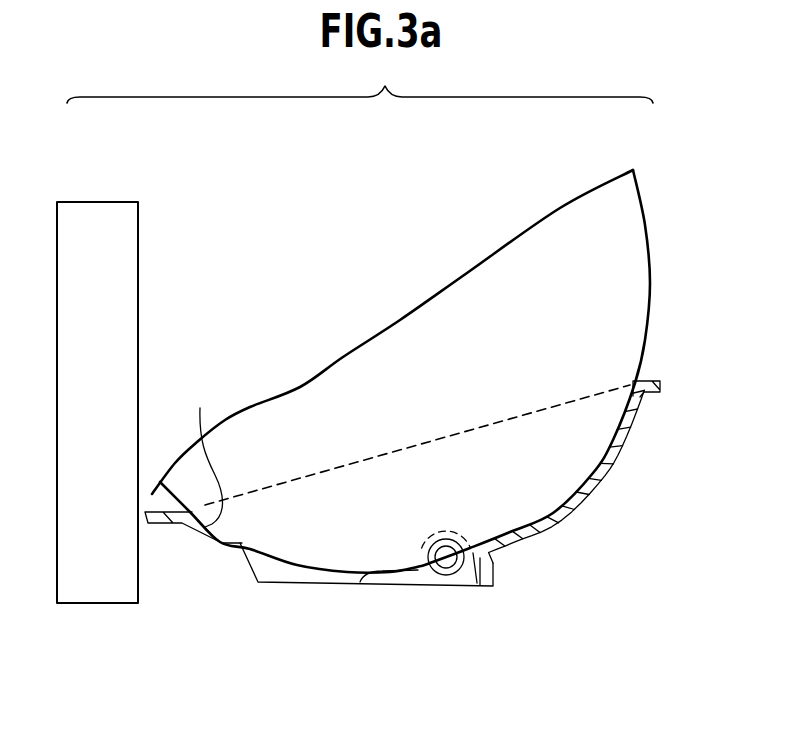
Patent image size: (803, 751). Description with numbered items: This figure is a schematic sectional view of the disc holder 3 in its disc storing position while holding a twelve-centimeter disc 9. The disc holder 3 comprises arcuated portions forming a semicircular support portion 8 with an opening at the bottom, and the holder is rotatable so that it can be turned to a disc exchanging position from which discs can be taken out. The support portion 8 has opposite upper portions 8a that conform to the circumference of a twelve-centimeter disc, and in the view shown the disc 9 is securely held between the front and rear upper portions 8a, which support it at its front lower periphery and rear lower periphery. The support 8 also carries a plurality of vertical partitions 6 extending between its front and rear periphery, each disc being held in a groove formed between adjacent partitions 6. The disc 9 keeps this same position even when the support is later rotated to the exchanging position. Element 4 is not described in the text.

The disc holder 3 is at (670, 404).
The wall 4 is at (84, 210).
The vertical partition 6 is at (551, 408).
The support portion 8 is at (632, 457).
The upper portion 8a is at (577, 477).
The twelve-centimeter disc 9 is at (475, 287).